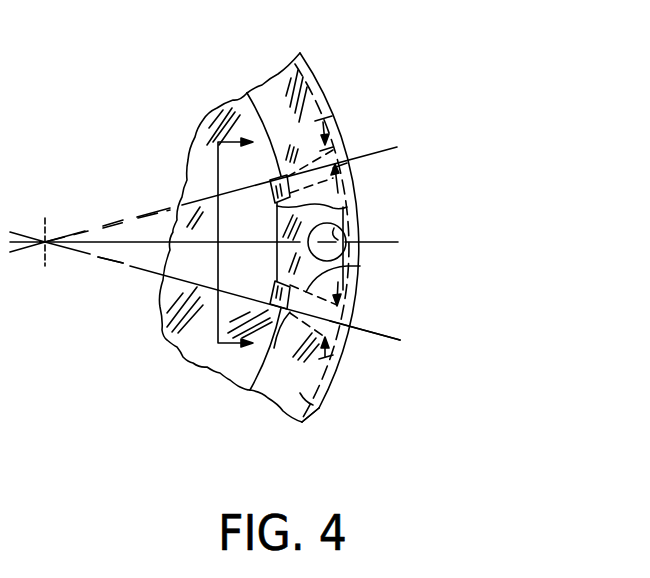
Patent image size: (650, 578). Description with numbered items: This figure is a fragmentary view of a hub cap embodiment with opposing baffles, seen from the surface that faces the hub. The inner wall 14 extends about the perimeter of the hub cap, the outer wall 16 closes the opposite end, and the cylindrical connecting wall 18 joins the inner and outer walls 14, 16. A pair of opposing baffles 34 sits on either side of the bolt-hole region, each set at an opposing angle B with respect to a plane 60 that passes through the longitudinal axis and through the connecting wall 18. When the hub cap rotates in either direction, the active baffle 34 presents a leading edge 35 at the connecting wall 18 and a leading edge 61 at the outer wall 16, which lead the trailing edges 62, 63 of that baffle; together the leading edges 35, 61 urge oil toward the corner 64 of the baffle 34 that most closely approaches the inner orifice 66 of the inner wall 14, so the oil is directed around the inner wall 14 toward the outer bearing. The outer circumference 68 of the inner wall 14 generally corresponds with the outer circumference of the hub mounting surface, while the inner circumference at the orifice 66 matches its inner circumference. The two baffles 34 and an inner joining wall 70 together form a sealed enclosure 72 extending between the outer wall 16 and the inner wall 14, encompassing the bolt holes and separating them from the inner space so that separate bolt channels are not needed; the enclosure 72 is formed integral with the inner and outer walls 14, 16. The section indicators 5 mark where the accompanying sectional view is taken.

The inner wall 14 is at (318, 411).
The outer wall 16 is at (190, 348).
The cylindrical connecting wall 18 is at (320, 82).
The opposing baffles 34 is at (338, 156).
The leading edge at connecting wall 35 is at (291, 358).
The section line 5 is at (235, 244).
The plane 60 is at (127, 240).
The leading edge at outer wall 61 is at (393, 337).
The trailing edge 62 is at (360, 266).
The trailing edge 63 is at (272, 284).
The corner of baffle 64 is at (345, 209).
The inner orifice 66 is at (238, 380).
The outer circumference of inner wall 68 is at (352, 301).
The inner joining wall 70 is at (277, 232).
The sealed enclosure 72 is at (346, 240).
The opposing angles B is at (334, 117).